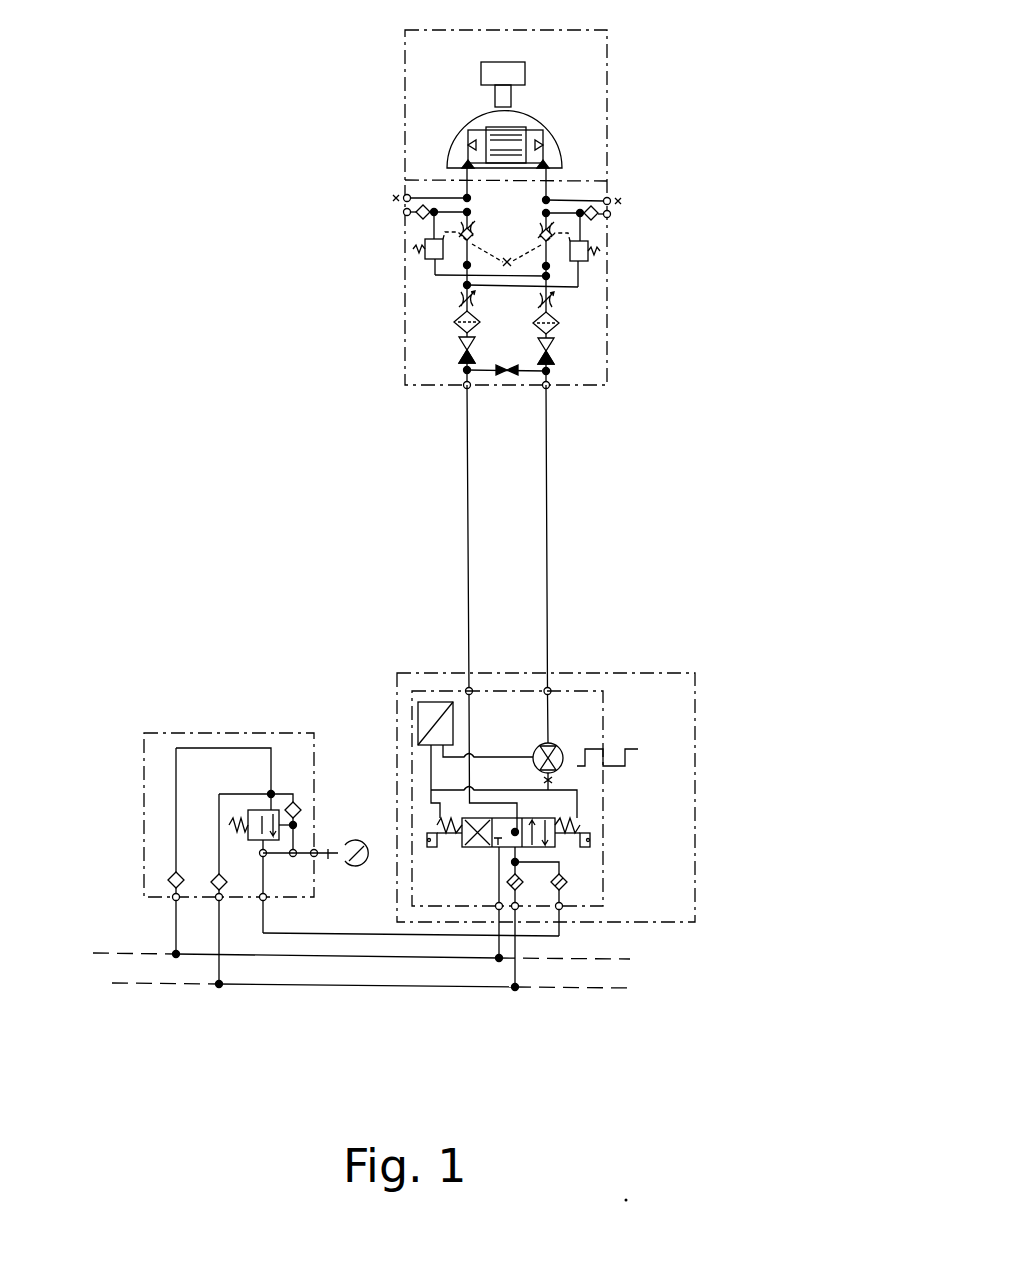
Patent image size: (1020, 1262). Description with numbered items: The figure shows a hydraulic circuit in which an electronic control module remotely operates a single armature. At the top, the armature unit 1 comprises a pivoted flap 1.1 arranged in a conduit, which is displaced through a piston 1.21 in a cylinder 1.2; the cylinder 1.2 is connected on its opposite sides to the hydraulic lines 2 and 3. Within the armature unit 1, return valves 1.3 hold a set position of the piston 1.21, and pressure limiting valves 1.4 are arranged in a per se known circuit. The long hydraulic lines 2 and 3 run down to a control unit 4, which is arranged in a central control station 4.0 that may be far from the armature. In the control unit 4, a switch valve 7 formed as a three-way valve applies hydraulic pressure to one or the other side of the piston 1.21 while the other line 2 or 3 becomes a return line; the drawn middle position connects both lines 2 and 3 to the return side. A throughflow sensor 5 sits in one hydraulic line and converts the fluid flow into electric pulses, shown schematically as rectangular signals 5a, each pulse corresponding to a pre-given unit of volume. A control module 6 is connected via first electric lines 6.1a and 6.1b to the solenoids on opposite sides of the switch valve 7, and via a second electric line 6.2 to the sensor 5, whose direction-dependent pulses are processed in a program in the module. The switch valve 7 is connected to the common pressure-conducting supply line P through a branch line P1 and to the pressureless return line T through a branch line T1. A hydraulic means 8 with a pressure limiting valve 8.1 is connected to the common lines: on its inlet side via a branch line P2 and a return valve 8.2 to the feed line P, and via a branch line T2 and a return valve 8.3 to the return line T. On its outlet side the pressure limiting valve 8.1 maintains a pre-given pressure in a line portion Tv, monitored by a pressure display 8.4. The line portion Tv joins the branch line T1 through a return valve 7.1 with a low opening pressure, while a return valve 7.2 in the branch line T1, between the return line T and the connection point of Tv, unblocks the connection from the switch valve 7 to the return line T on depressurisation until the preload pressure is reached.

The armature unit 1 is at (623, 169).
The pivoted flap 1.1 is at (525, 65).
The cylinder 1.2 is at (472, 116).
The piston 1.21 is at (470, 132).
The return valves 1.3 is at (458, 222).
The pressure limiting valves 1.4 is at (410, 240).
The hydraulic line 2 is at (548, 514).
The hydraulic line 3 is at (469, 520).
The control unit 4 is at (603, 692).
The central control station 4.0 is at (677, 673).
The throughflow sensor 5 is at (553, 743).
The rectangular signals 5a is at (640, 749).
The control module 6 is at (430, 702).
The first electric line 6.1a is at (430, 777).
The first electric line 6.1b is at (435, 790).
The second electric line 6.2 is at (490, 757).
The switch valve 7 is at (492, 817).
The return valve 7.1 is at (567, 881).
The return valve 7.2 is at (518, 861).
The hydraulic means 8 is at (144, 747).
The pressure limiting valve 8.1 is at (271, 806).
The return valve 8.2 is at (219, 877).
The return valve 8.3 is at (176, 872).
The pressure display 8.4 is at (351, 845).
The pressure-conducting supply line P is at (100, 953).
The pressureless return line T is at (122, 983).
The branch line P1 is at (499, 943).
The branch line P2 is at (176, 925).
The branch line T1 is at (516, 943).
The branch line T2 is at (221, 932).
The line portion Tv is at (338, 934).